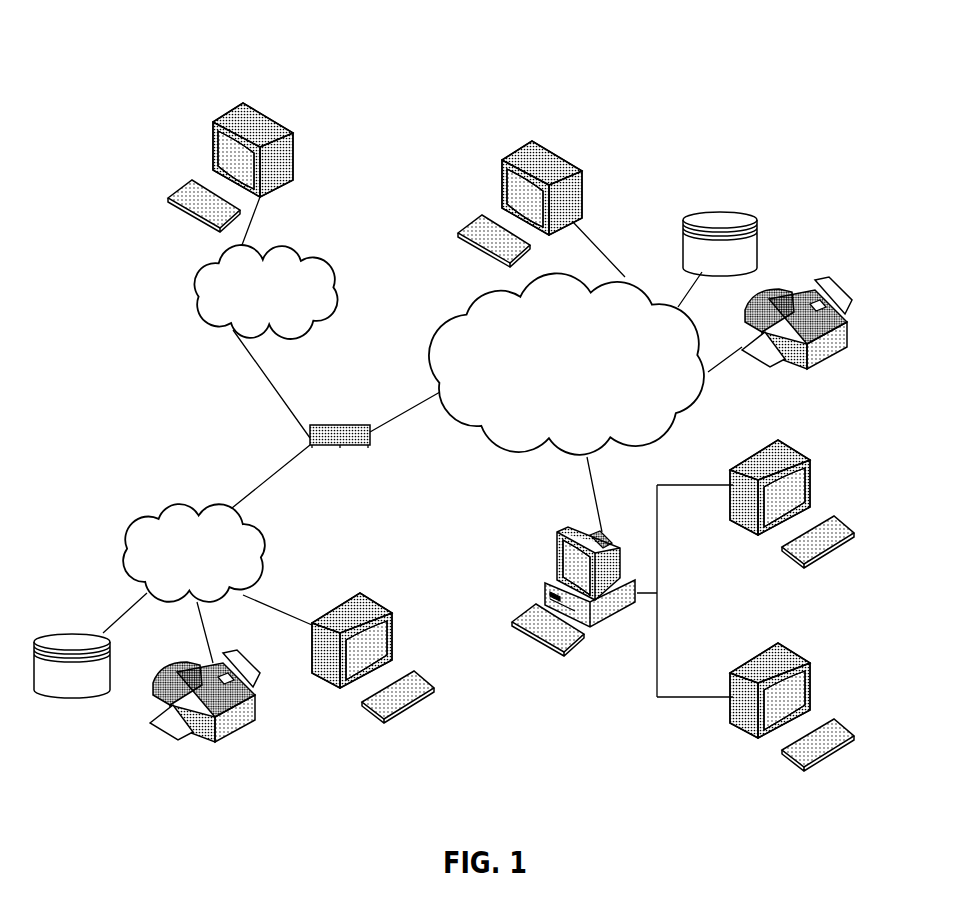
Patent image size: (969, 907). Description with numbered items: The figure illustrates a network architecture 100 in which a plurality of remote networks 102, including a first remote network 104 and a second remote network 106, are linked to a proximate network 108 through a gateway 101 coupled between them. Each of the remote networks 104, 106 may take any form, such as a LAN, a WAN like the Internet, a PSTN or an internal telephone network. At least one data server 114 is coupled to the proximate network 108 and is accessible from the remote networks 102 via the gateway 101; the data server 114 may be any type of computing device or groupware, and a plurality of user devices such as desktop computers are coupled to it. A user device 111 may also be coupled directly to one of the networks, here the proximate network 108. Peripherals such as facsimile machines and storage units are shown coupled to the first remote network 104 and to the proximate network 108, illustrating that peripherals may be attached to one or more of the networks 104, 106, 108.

The network architecture 100 is at (146, 87).
The gateway 101 is at (322, 425).
The remote networks 102 is at (168, 342).
The first remote network 104 is at (125, 531).
The second remote network 106 is at (332, 267).
The proximate network 108 is at (672, 434).
The user device 111 is at (585, 176).
The data server 114 is at (557, 548).